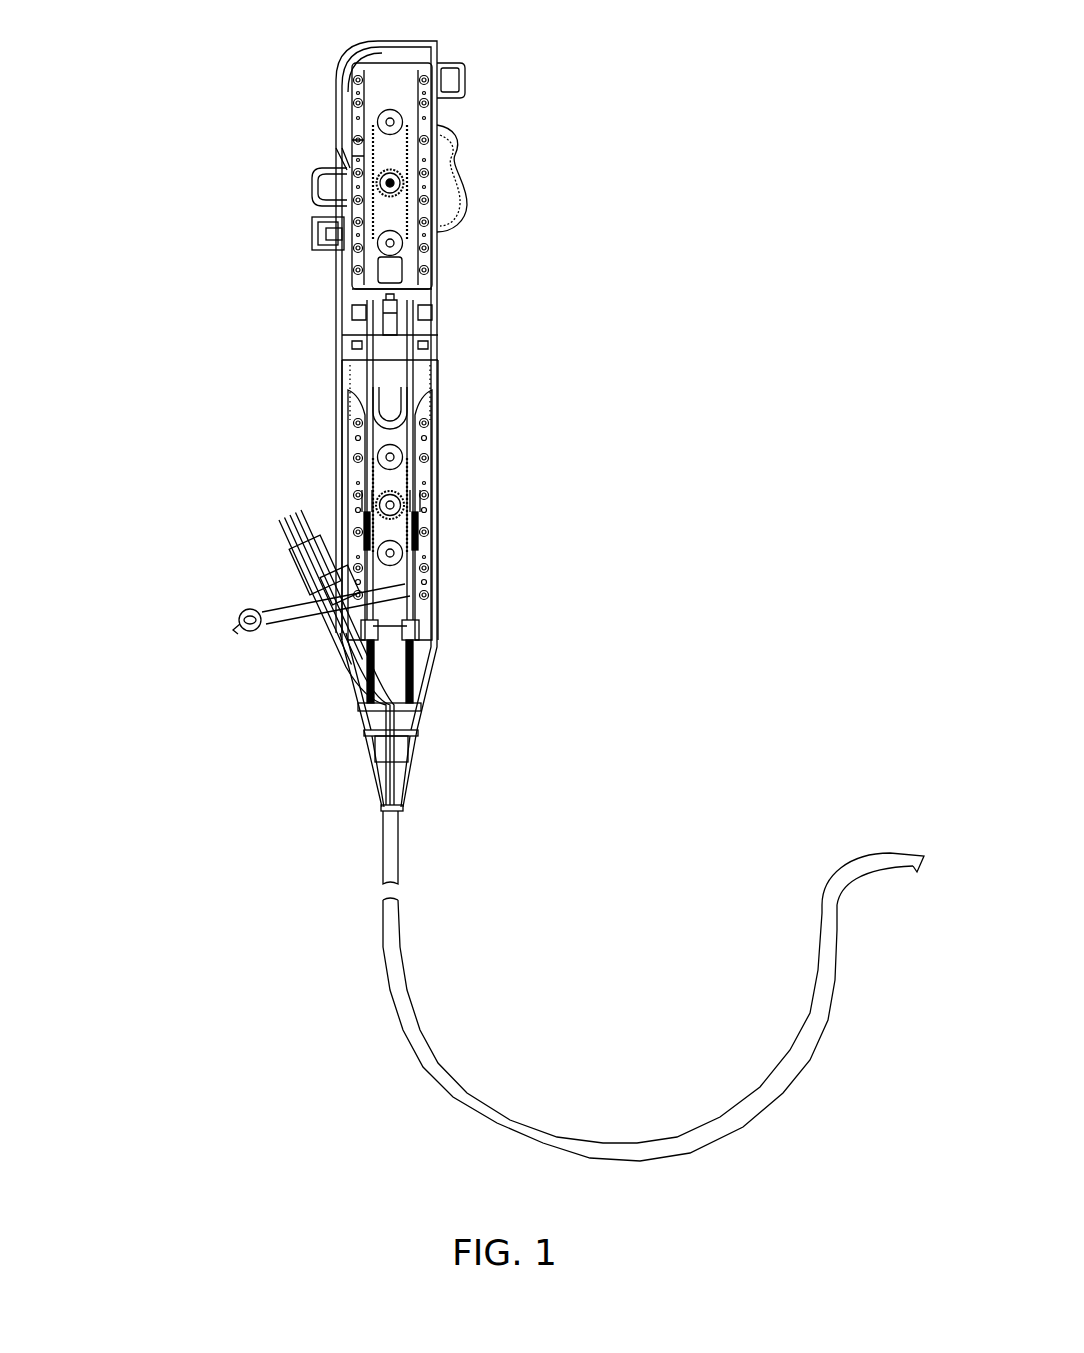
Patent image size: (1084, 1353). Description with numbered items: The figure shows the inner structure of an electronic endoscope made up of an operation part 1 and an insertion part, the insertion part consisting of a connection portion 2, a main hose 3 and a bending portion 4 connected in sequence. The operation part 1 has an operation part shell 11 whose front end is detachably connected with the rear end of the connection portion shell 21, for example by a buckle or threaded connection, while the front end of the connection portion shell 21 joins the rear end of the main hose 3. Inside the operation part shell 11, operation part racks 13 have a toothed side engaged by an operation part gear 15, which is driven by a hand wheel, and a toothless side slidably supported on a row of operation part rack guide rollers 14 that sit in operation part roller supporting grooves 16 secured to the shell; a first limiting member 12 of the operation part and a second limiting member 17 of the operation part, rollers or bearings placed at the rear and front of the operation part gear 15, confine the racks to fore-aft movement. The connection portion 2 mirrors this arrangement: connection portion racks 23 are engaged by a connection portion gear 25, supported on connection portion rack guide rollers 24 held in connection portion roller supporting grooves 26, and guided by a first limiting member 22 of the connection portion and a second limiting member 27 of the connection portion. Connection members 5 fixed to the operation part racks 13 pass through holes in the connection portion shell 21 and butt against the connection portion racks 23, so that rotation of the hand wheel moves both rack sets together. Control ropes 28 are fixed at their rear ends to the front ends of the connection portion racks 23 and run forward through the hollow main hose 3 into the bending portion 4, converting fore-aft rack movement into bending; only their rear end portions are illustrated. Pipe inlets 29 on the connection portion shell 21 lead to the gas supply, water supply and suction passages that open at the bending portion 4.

The operation part 1 is at (490, 203).
The connection portion 2 is at (242, 430).
The main hose 3 is at (390, 842).
The bending portion 4 is at (915, 863).
The connection member 5 is at (370, 325).
The operation part shell 11 is at (382, 56).
The first limiting member of operation part 12 is at (390, 122).
The operation part rack 13 is at (365, 148).
The operation part rack guide roller 14 is at (347, 177).
The operation part gear 15 is at (386, 188).
The operation part roller supporting groove 16 is at (345, 240).
The second limiting member of operation part 17 is at (388, 247).
The connection portion shell 21 is at (437, 385).
The first limiting member of connection portion 22 is at (407, 447).
The connection portion rack 23 is at (410, 473).
The connection portion rack guide roller 24 is at (432, 493).
The connection portion gear 25 is at (410, 513).
The connection portion roller supporting groove 26 is at (427, 548).
The second limiting member of connection portion 27 is at (425, 572).
The control rope 28 is at (417, 662).
The pipe inlet 29 is at (283, 537).